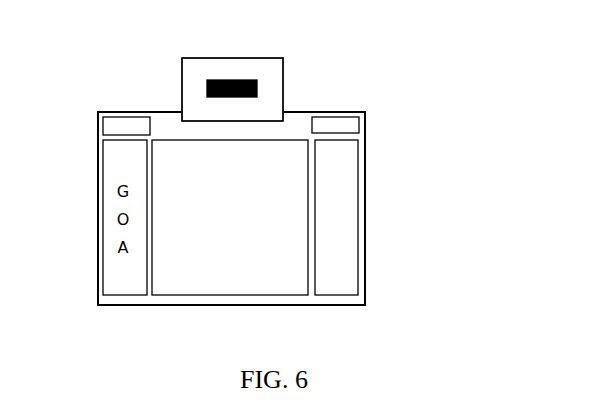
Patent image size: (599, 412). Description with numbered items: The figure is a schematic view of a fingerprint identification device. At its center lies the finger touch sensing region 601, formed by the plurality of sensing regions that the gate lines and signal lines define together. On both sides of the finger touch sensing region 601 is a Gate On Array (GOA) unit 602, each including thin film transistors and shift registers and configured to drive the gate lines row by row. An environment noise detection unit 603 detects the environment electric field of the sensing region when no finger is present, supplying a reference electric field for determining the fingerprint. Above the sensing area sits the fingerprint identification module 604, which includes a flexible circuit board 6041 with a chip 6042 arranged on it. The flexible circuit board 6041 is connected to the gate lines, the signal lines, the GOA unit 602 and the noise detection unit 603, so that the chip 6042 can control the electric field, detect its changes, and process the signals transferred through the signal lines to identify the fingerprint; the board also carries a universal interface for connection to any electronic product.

The finger touch sensing region 601 is at (293, 163).
The Gate On Array (GOA) unit 602 is at (345, 233).
The environment noise detection unit 603 is at (348, 126).
The fingerprint identification module 604 is at (182, 85).
The flexible circuit board 6041 is at (264, 100).
The chip 6042 is at (257, 87).